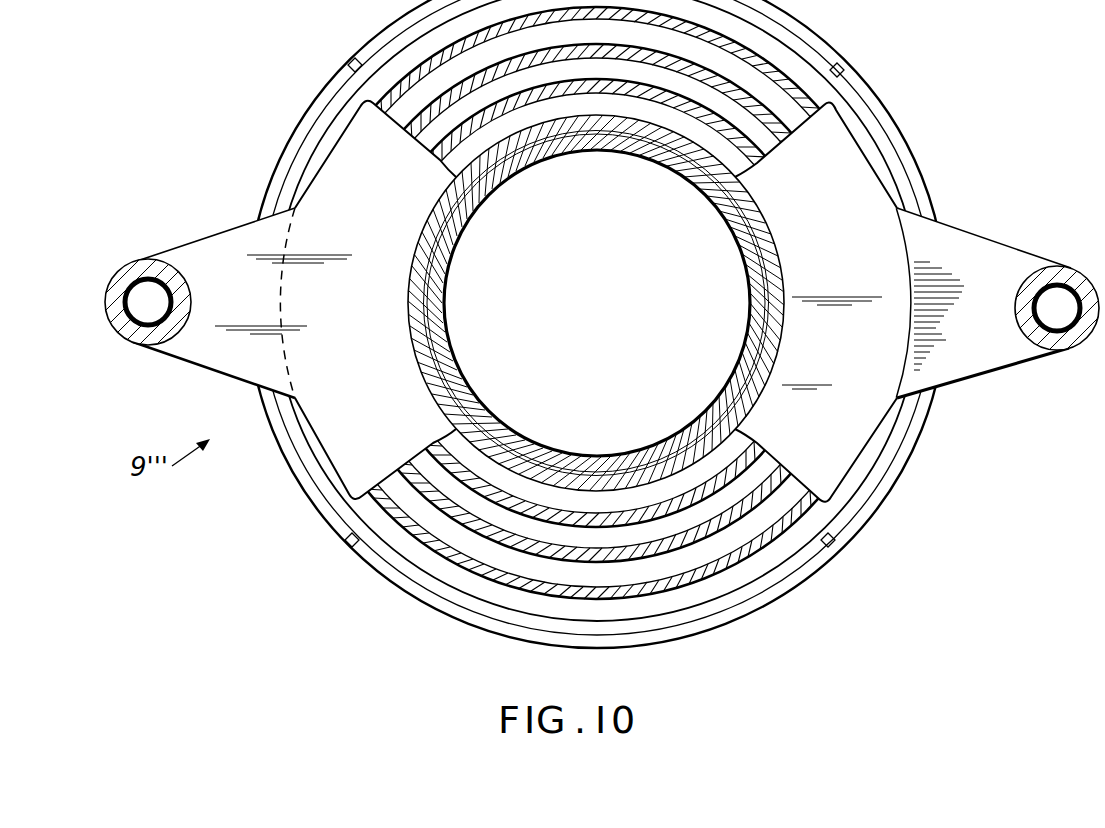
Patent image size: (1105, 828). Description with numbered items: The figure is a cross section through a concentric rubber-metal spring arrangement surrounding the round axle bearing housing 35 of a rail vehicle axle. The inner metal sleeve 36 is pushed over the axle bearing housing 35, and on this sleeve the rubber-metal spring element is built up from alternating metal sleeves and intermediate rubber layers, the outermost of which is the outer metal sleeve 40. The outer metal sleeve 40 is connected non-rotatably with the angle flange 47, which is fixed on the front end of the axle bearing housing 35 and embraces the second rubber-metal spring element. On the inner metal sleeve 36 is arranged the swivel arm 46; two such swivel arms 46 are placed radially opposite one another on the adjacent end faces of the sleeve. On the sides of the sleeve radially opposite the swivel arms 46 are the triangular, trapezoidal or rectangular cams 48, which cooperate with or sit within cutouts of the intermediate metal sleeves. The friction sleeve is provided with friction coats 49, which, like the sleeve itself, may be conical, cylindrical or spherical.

The axle bearing housing 35 is at (628, 462).
The inner metal sleeve 36 is at (554, 474).
The outer metal sleeve 40 is at (481, 612).
The swivel arm 46 is at (197, 255).
The angle flange 47 is at (388, 577).
The cam 48 is at (348, 476).
The friction coat 49 is at (667, 452).